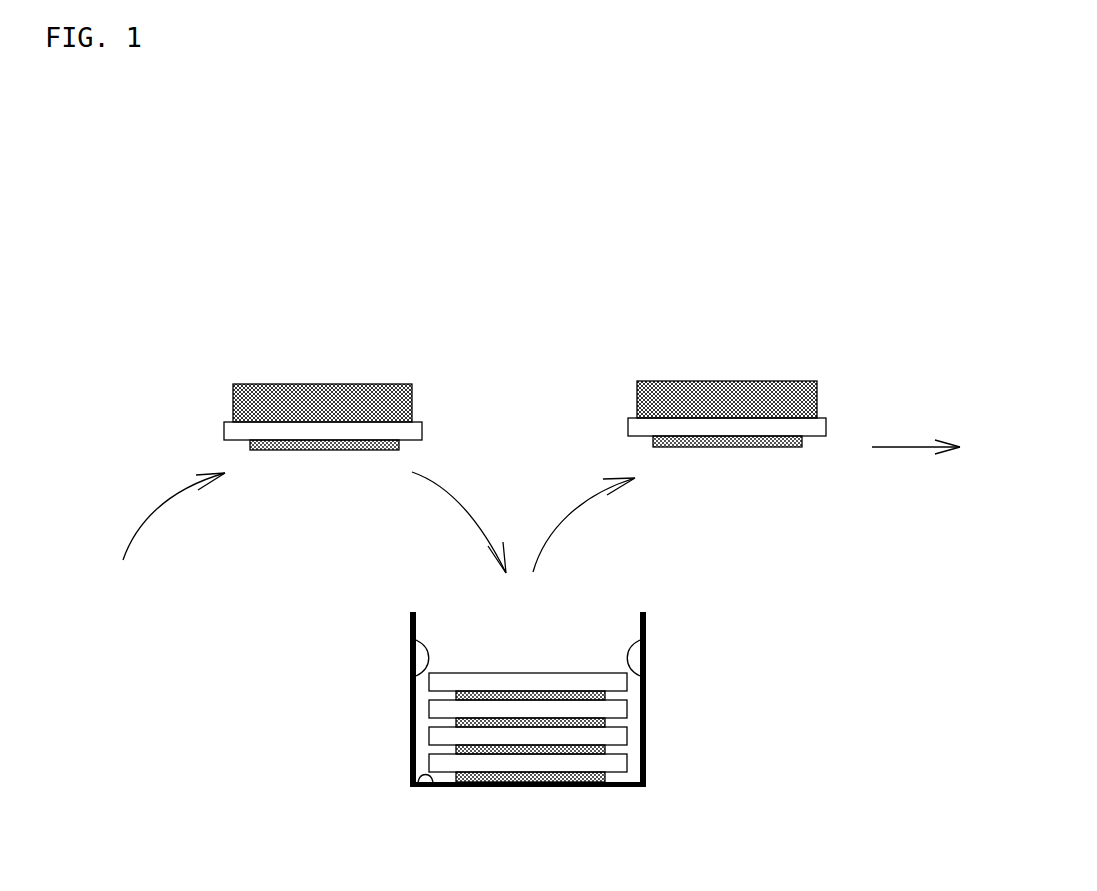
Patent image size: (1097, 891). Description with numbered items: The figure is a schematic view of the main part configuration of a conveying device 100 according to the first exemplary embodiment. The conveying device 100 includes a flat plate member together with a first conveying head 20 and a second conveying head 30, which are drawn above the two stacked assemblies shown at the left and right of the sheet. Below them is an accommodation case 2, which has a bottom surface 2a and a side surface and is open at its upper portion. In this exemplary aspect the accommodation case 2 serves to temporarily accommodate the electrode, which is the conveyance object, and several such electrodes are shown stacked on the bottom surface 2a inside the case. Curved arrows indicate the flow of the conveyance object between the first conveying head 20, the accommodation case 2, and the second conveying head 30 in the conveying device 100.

The conveying device 100 is at (658, 287).
The first conveying head 20 is at (233, 395).
The second conveying head 30 is at (817, 398).
The accommodation case 2 is at (667, 633).
The bottom surface 2a is at (423, 784).